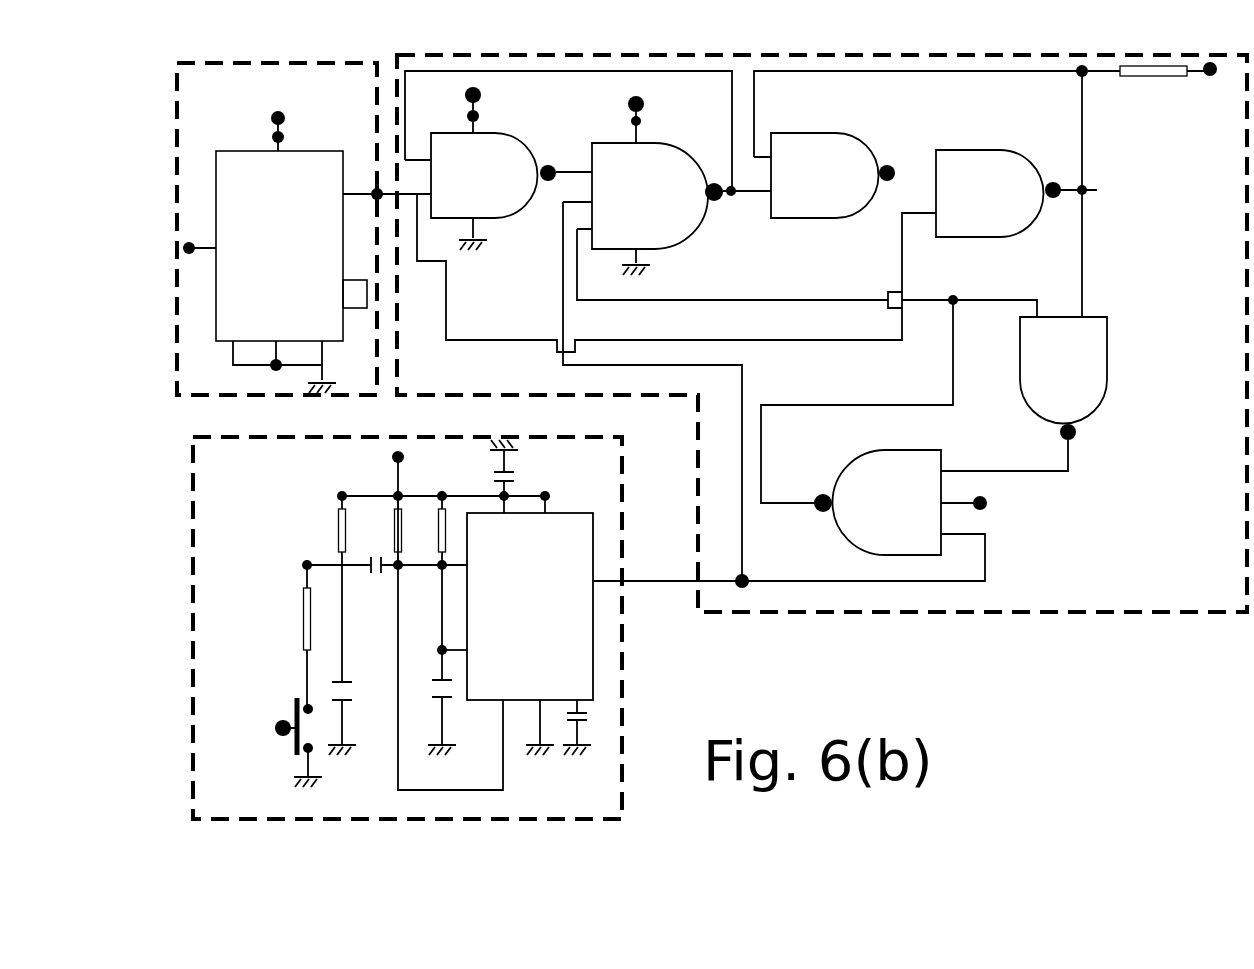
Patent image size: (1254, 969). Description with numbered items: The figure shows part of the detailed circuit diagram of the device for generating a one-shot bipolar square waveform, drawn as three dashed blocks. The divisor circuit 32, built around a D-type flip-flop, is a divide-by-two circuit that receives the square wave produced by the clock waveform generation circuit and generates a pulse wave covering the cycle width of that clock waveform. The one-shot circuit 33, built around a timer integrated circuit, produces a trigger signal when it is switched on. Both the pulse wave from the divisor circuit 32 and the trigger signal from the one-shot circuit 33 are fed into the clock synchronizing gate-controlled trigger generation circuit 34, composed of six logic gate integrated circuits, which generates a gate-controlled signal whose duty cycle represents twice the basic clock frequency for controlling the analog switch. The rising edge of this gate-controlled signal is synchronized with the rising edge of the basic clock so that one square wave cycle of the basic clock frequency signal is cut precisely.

The divisor circuit 32 is at (242, 88).
The one-shot circuit 33 is at (602, 733).
The clock synchronizing gate-controlled trigger generation circuit 34 is at (1141, 562).